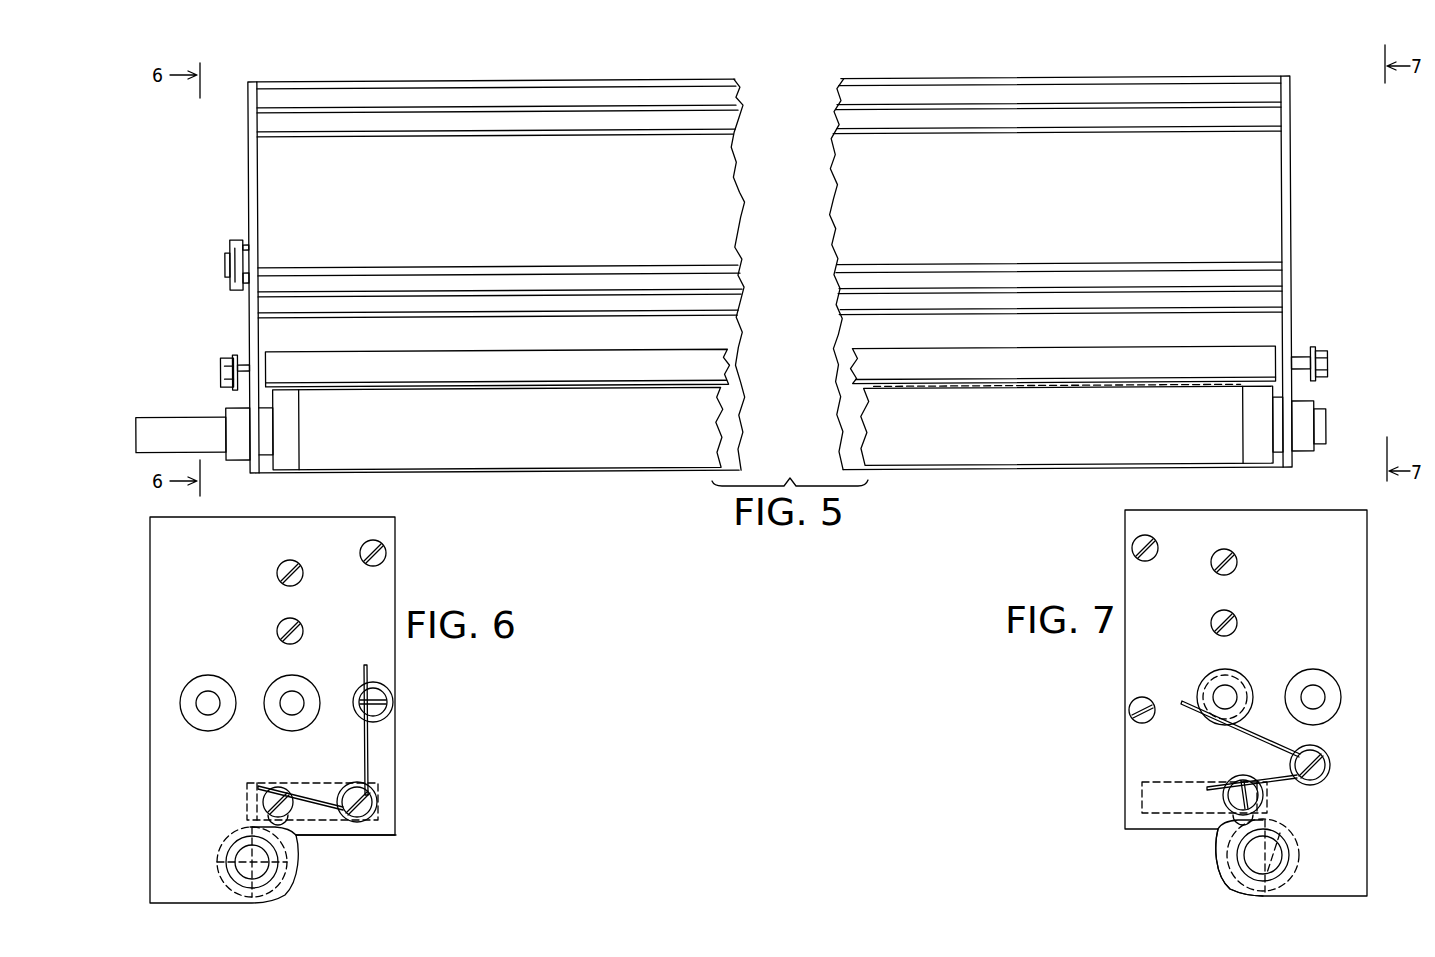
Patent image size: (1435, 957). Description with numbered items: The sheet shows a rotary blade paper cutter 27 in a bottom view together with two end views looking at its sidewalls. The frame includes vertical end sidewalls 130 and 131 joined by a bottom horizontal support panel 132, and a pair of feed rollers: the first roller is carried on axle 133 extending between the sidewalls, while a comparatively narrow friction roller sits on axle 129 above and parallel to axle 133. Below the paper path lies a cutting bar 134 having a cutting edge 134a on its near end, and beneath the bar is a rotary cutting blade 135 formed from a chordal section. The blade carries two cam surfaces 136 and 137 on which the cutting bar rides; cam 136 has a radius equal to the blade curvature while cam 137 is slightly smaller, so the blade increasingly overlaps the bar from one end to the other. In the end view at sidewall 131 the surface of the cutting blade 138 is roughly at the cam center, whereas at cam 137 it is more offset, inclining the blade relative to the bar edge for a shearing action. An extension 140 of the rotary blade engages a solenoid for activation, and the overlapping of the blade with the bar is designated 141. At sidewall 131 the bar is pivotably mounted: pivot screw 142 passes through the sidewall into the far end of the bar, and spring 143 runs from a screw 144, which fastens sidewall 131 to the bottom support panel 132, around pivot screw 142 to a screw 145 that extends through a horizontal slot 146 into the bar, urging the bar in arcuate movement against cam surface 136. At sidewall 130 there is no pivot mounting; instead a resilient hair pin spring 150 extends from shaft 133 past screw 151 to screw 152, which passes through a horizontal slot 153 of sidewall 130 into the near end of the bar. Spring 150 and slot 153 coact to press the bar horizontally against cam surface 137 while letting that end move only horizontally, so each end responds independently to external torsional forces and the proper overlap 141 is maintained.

In FIG. 5, the paper cutter 27 is at (1268, 74).
In FIG. 6, the axle 129 is at (208, 695).
In FIG. 7, the axle 129 is at (1313, 693).
In FIG. 5, the vertical end sidewall 130 is at (1290, 150).
In FIG. 7, the vertical end sidewall 130 is at (1306, 581).
In FIG. 5, the vertical end sidewall 131 is at (248, 128).
In FIG. 6, the vertical end sidewall 131 is at (198, 589).
In FIG. 5, the bottom horizontal support panel 132 is at (671, 209).
In FIG. 5, the axle 133 is at (240, 272).
In FIG. 6, the axle 133 is at (293, 696).
In FIG. 7, the axle 133 is at (1227, 694).
In FIG. 5, the cutting bar 134 is at (1198, 356).
In FIG. 6, the cutting bar 134 is at (392, 812).
In FIG. 7, the cutting bar 134 is at (1158, 796).
In FIG. 5, the cutting edge 134a is at (643, 386).
In FIG. 5, the rotary cutting blade 135 is at (969, 452).
In FIG. 5, the cam surface 136 is at (290, 424).
In FIG. 6, the cam surface 136 is at (226, 843).
In FIG. 5, the cam surface 137 is at (1255, 431).
In FIG. 6, the cutting blade surface 138 is at (230, 866).
In FIG. 7, the cutting blade surface 138 is at (1281, 852).
In FIG. 5, the extension 140 is at (168, 432).
In FIG. 6, the extension 140 is at (262, 863).
In FIG. 5, the overlap 141 is at (1121, 385).
In FIG. 5, the pivot screw 142 is at (218, 373).
In FIG. 6, the pivot screw 142 is at (352, 788).
In FIG. 6, the spring 143 is at (370, 767).
In FIG. 6, the screw 144 is at (378, 707).
In FIG. 6, the screw 145 is at (278, 790).
In FIG. 6, the horizontal slot 146 is at (298, 837).
In FIG. 7, the resilient hair pin spring 150 is at (1250, 735).
In FIG. 7, the screw 151 is at (1322, 781).
In FIG. 5, the screw 152 is at (1334, 331).
In FIG. 7, the screw 152 is at (1242, 778).
In FIG. 7, the horizontal slot 153 is at (1220, 822).